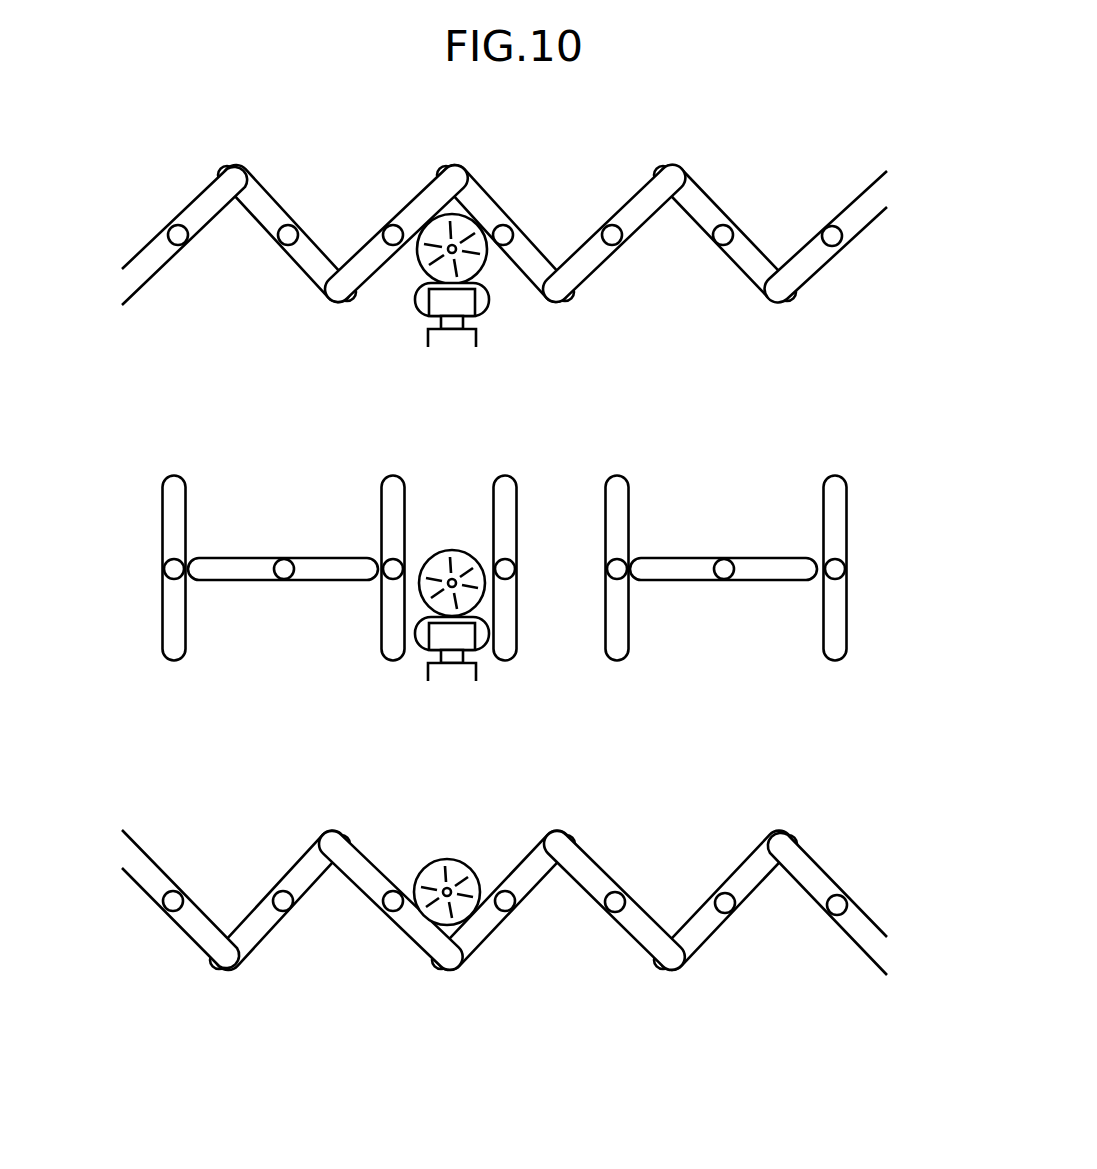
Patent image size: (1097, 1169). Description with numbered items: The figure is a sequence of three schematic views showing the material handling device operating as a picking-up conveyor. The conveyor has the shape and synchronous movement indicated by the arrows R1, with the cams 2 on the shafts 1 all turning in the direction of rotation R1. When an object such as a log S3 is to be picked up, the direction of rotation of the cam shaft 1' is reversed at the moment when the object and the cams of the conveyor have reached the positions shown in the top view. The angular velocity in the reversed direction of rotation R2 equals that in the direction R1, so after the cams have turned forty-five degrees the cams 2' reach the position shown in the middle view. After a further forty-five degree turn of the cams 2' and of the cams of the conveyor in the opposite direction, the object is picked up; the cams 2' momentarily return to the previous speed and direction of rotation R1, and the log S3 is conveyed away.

The shaft 1 is at (505, 570).
The cam 2 is at (504, 546).
The shaft 1' is at (539, 568).
The cam 2' is at (504, 558).
The log S3 is at (425, 272).
The direction of rotation R1 is at (165, 183).
The reversed direction of rotation R2 is at (547, 218).